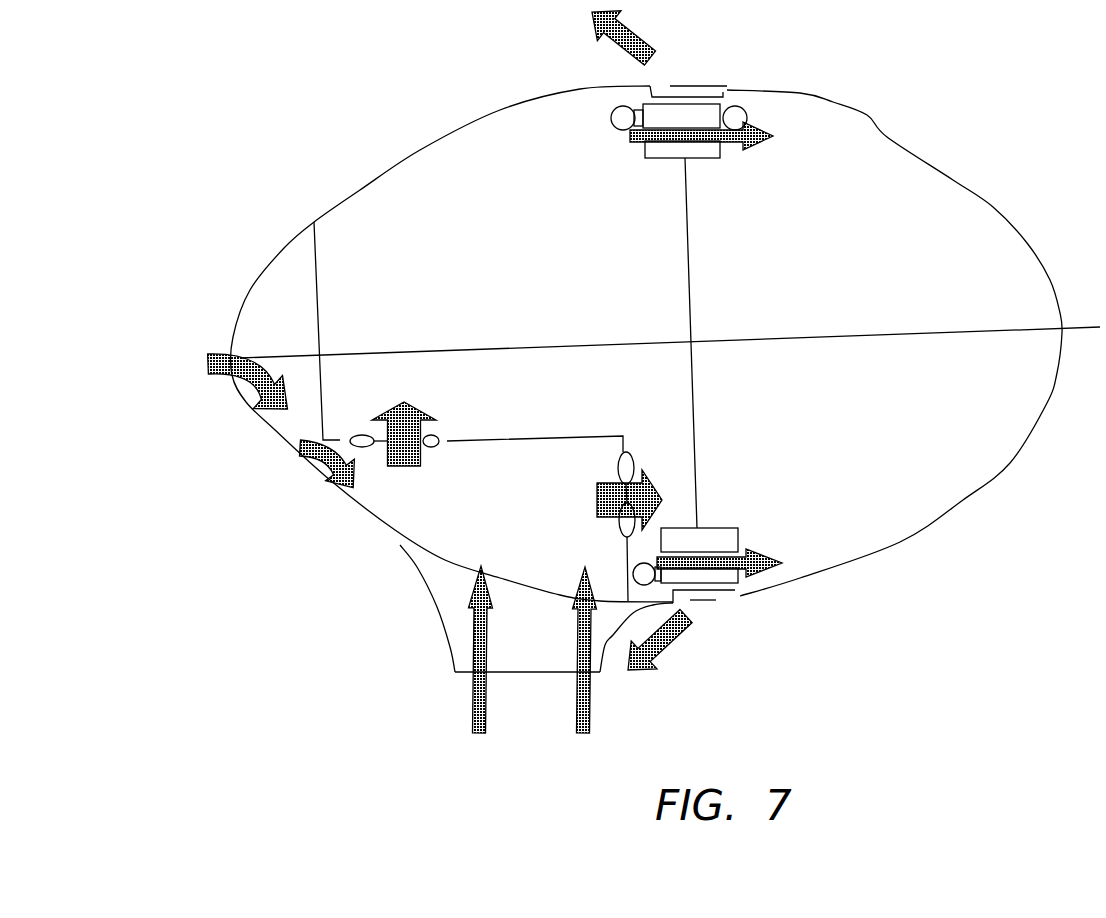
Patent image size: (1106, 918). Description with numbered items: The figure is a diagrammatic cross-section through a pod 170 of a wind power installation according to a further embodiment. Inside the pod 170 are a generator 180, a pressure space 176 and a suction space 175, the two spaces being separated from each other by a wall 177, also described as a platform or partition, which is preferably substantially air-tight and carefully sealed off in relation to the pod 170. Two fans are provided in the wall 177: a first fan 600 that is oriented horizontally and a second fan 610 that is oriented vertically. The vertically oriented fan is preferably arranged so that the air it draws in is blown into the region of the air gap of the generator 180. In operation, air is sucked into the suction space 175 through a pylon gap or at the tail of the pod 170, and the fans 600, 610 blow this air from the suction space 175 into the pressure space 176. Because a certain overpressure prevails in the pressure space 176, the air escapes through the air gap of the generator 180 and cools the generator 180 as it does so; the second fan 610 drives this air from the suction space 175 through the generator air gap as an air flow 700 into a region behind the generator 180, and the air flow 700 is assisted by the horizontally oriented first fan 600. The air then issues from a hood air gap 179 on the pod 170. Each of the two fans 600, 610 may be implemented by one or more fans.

The pod 170 is at (997, 208).
The suction space 175 is at (516, 487).
The pressure space 176 is at (541, 203).
The wall 177 is at (316, 252).
The hood air gap 179 is at (713, 603).
The generator 180 is at (724, 97).
The first fan 600 is at (607, 526).
The second fan 610 is at (408, 428).
The air flow 700 is at (727, 349).